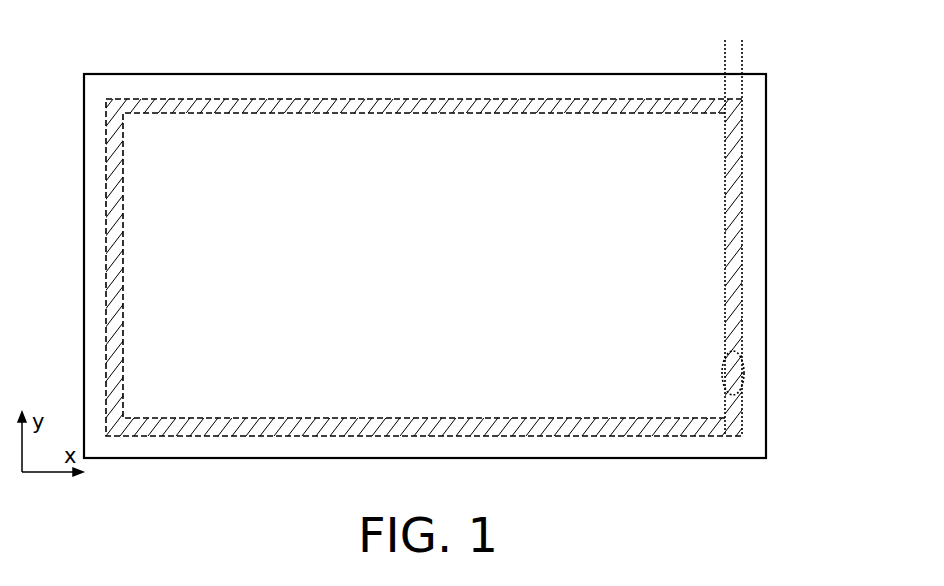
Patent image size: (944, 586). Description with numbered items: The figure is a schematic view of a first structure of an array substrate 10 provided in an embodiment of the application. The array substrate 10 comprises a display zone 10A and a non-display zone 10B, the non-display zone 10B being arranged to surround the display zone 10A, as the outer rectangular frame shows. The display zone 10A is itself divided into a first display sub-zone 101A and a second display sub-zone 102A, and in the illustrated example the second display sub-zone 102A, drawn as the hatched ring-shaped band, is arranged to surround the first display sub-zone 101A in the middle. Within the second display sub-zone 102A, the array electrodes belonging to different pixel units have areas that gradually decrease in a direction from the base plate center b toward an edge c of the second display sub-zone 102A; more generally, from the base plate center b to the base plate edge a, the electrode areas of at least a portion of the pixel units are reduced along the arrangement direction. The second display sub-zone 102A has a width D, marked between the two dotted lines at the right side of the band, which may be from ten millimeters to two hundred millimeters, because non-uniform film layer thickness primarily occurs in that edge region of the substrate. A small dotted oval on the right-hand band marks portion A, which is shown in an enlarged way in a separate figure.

The array substrate 10 is at (472, 236).
The display zone 10A is at (472, 267).
The non-display zone 10B is at (766, 133).
The first display sub-zone 101A is at (714, 240).
The second display sub-zone 102A is at (741, 183).
The portion A is at (754, 378).
The width of the second display sub-zone D is at (750, 59).
The base plate edge a is at (69, 269).
The base plate center b is at (424, 267).
The edge of the second display sub-zone c is at (98, 269).